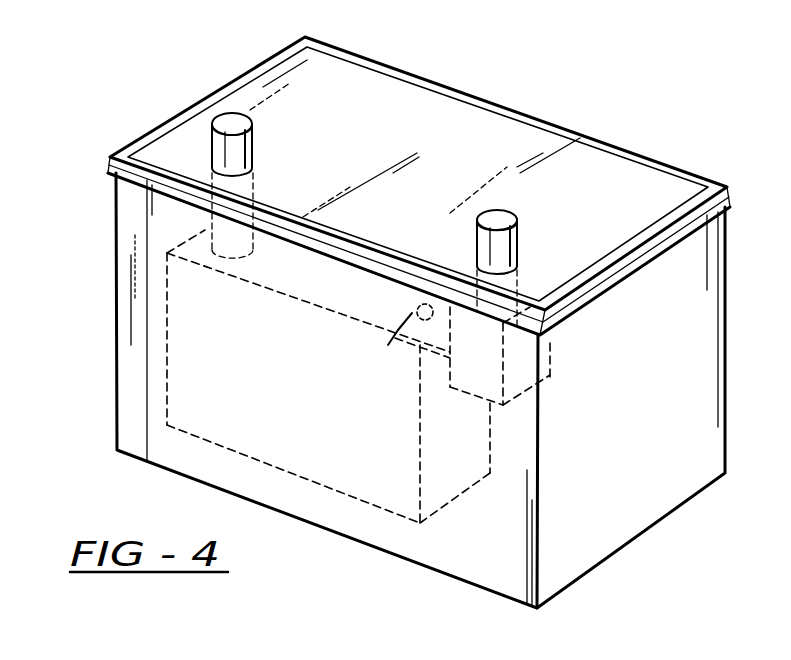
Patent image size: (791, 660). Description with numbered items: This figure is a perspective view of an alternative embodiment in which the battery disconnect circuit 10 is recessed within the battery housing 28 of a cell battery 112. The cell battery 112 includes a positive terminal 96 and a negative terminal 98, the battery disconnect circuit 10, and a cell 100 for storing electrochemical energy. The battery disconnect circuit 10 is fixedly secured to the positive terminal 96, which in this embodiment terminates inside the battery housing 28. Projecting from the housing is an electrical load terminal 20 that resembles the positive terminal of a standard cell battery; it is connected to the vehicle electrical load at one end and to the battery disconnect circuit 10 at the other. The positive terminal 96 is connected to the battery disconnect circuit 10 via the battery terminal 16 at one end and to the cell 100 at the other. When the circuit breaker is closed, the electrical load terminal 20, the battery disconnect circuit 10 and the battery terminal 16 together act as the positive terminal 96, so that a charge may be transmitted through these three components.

The battery disconnect circuit 10 is at (548, 357).
The battery terminal 16 is at (417, 304).
The electrical load terminal 20 is at (478, 238).
The battery housing 28 is at (527, 110).
The positive terminal 96 is at (393, 340).
The negative terminal 98 is at (252, 147).
The cell 100 is at (257, 291).
The cell battery 112 is at (640, 135).